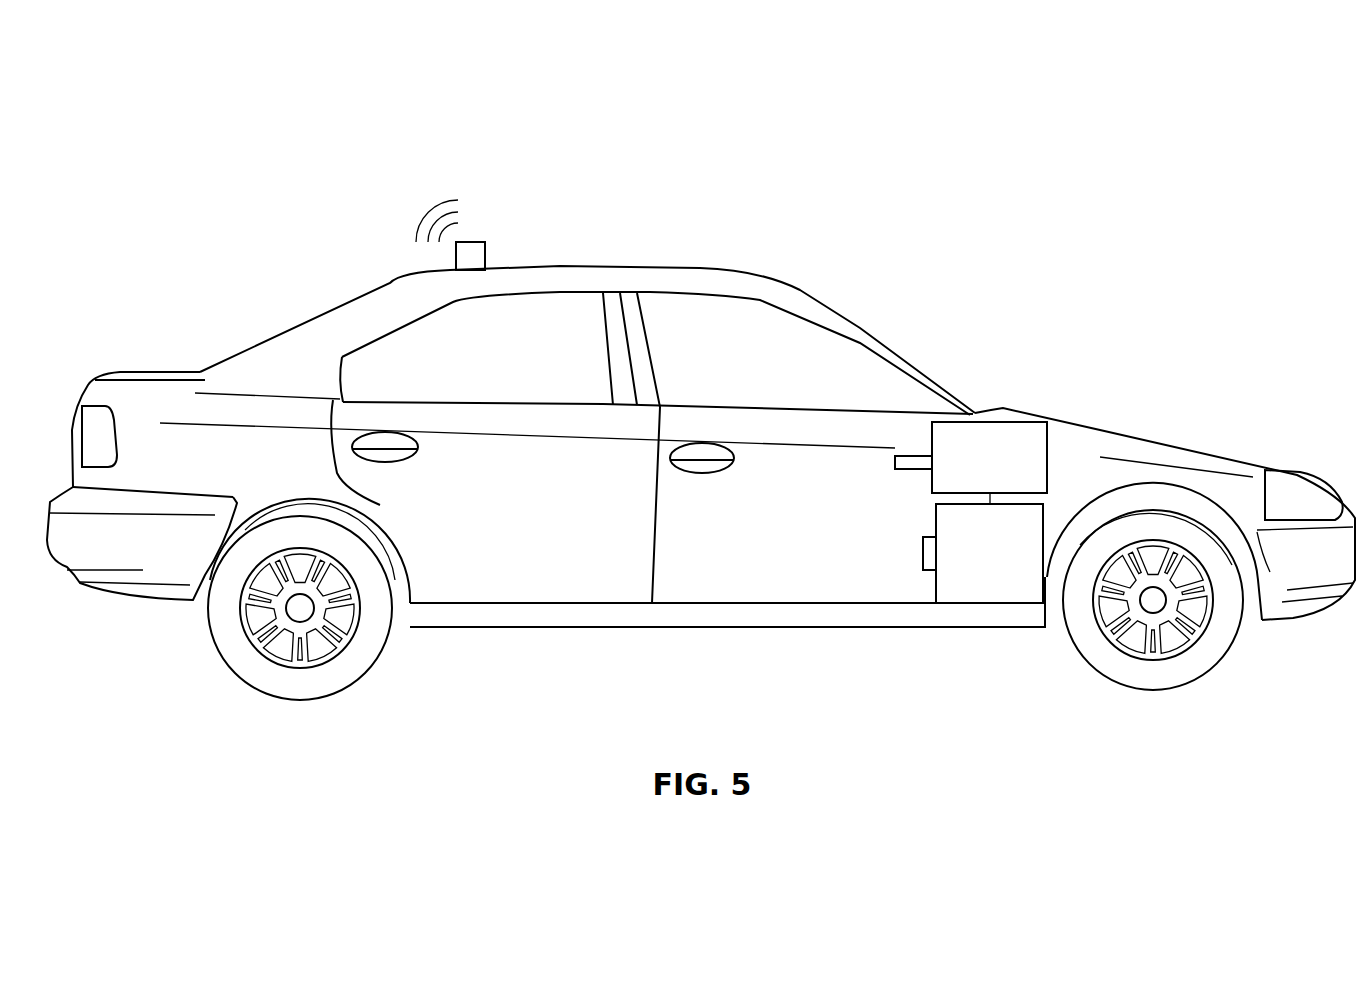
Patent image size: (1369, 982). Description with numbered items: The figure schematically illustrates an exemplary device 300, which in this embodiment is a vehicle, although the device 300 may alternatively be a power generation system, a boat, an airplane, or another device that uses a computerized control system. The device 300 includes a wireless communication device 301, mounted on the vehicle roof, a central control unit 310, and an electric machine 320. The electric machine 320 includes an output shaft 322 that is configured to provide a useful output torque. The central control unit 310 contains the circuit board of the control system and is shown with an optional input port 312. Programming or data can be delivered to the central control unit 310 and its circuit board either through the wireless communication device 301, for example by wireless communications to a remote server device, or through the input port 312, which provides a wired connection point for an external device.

The device 300 is at (680, 267).
The wireless communication device 301 is at (468, 242).
The central control unit 310 is at (990, 604).
The input port 312 is at (931, 571).
The electric machine 320 is at (987, 422).
The output shaft 322 is at (915, 453).